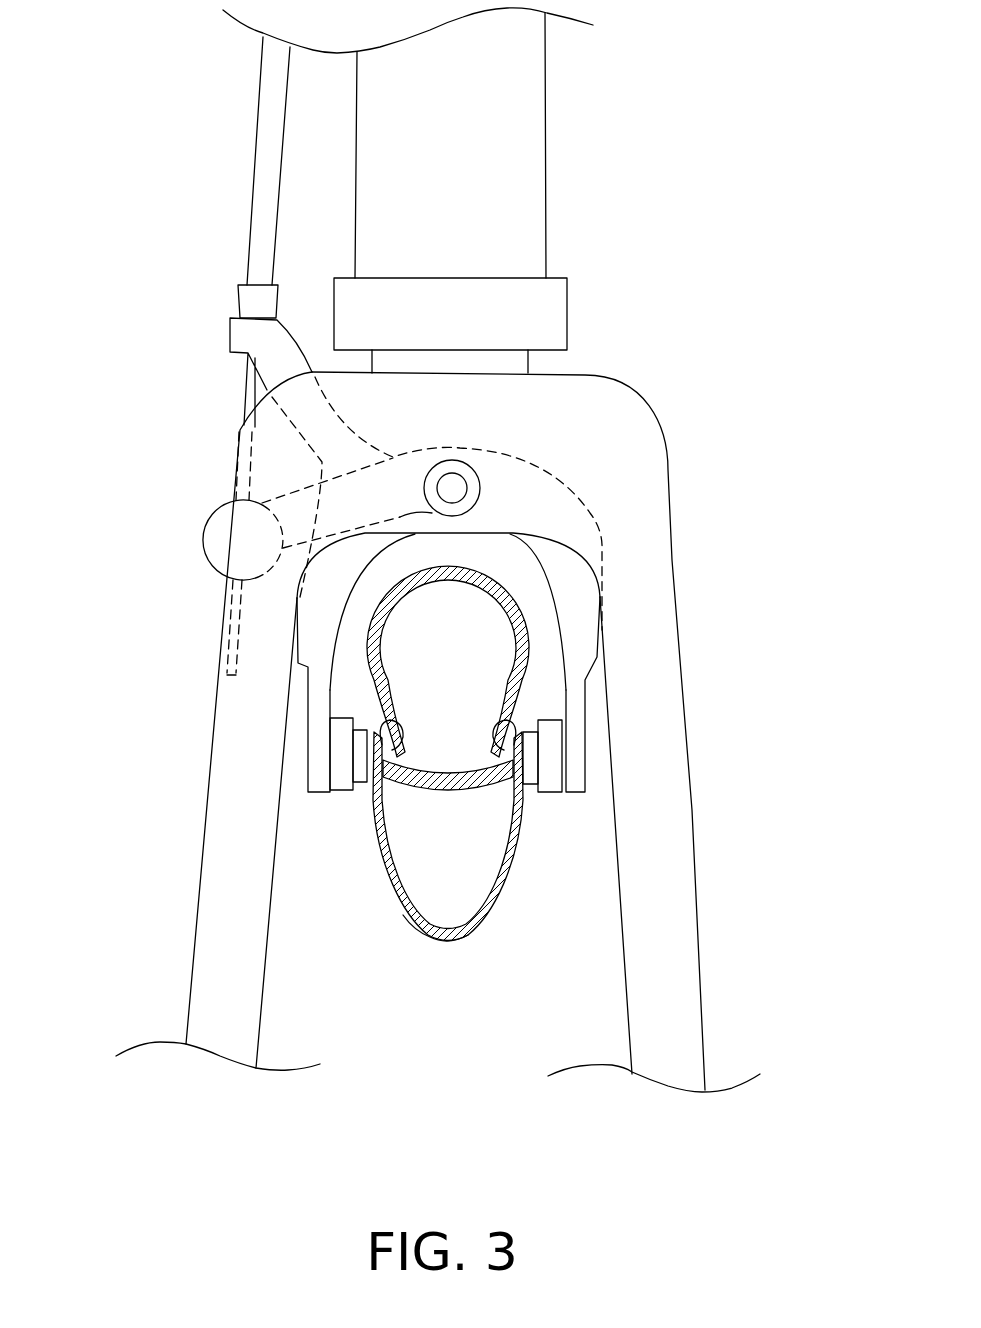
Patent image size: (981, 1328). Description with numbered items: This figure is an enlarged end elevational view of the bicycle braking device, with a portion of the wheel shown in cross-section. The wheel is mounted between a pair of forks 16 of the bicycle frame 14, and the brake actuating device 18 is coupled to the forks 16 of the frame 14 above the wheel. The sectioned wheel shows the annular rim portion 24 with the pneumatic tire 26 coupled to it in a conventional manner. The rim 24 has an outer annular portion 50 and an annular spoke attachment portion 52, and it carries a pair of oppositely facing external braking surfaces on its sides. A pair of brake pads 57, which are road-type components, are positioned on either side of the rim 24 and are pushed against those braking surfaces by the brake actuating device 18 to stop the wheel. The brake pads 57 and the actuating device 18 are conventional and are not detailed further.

The frame 14 is at (550, 193).
The forks 16 is at (678, 617).
The brake actuating device 18 is at (600, 692).
The annular rim portion 24 is at (515, 859).
The pneumatic tire 26 is at (512, 608).
The outer annular portion 50 is at (392, 717).
The annular spoke attachment portion 52 is at (400, 920).
The brake pads 57 is at (345, 795).